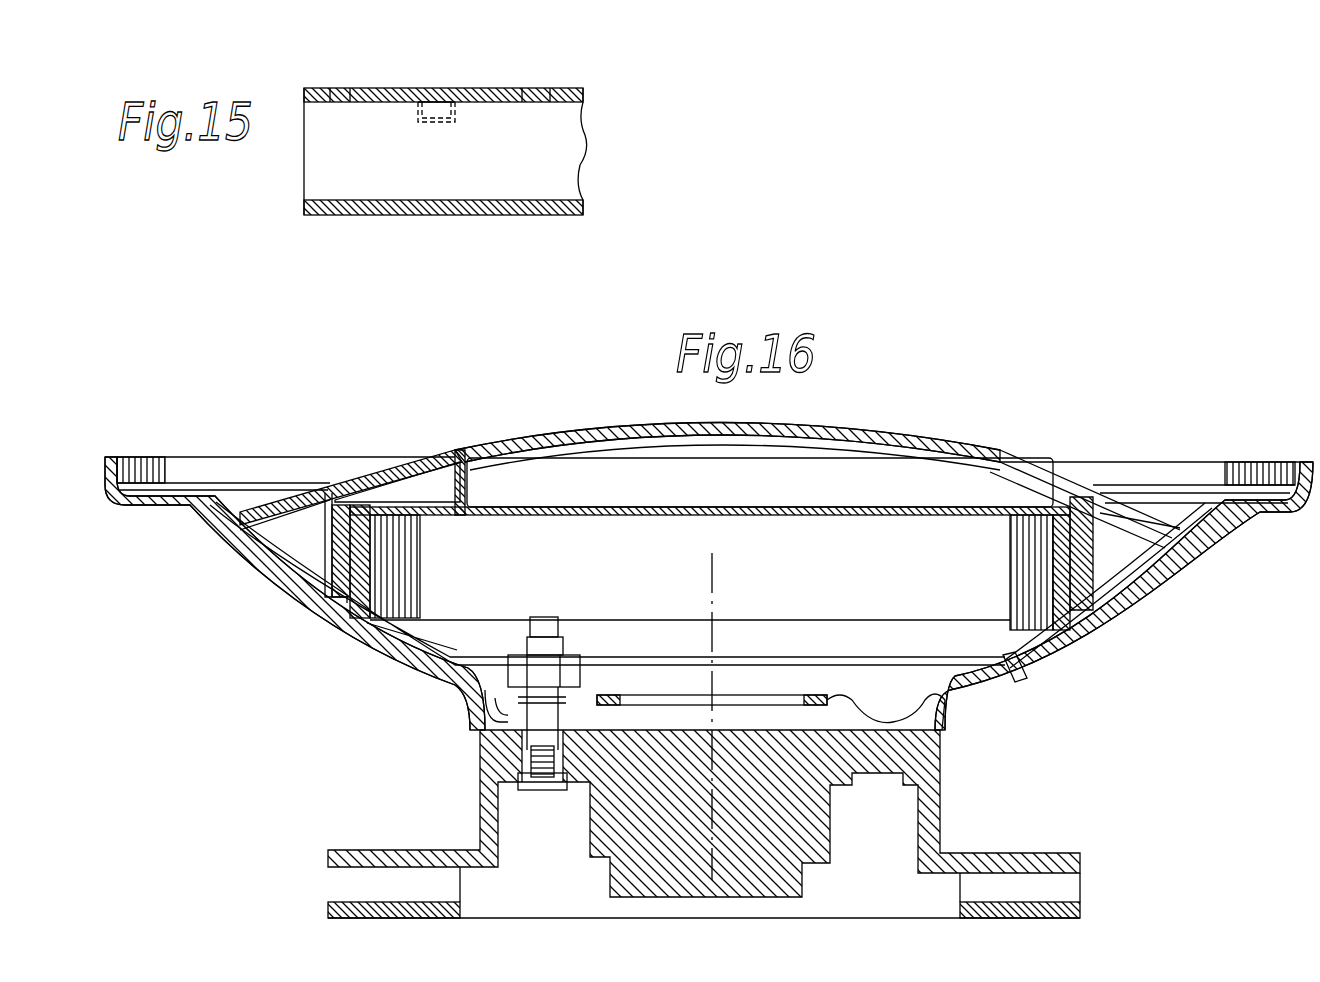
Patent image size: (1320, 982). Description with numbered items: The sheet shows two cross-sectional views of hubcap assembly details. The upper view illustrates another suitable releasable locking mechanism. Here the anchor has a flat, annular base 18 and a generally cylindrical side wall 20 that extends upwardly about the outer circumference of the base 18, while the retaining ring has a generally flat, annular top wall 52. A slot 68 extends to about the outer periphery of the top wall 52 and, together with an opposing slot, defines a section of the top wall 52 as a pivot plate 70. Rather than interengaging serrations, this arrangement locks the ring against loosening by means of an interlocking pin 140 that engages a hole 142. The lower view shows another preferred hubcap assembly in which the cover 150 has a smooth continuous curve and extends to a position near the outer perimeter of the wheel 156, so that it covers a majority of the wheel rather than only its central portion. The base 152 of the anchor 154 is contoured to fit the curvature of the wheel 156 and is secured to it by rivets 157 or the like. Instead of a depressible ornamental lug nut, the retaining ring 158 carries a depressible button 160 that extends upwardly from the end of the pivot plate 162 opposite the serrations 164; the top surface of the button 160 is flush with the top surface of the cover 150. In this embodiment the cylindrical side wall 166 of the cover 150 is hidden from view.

In FIG. 15, the base 18 is at (388, 212).
In FIG. 15, the side wall 20 is at (575, 168).
In FIG. 15, the top wall 52 is at (570, 90).
In FIG. 15, the second slot 68 is at (340, 90).
In FIG. 15, the pivot plate 70 is at (390, 90).
In FIG. 15, the interlocking pin 140 is at (440, 100).
In FIG. 15, the hole 142 is at (455, 115).
In FIG. 16, the cover 150 is at (962, 437).
In FIG. 16, the base 152 is at (430, 622).
In FIG. 16, the anchor 154 is at (383, 592).
In FIG. 16, the wheel 156 is at (1163, 572).
In FIG. 16, the rivets 157 is at (1020, 678).
In FIG. 16, the retaining ring 158 is at (968, 490).
In FIG. 16, the depressible button 160 is at (455, 450).
In FIG. 16, the pivot plate 162 is at (448, 502).
In FIG. 16, the serrations 164 is at (380, 520).
In FIG. 16, the cylindrical side wall 166 is at (1095, 556).